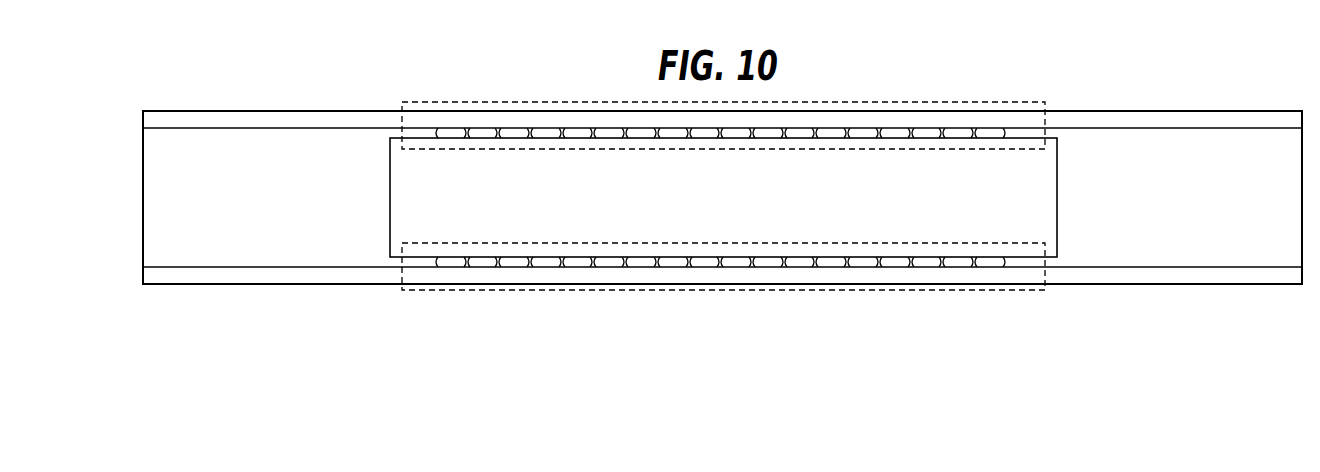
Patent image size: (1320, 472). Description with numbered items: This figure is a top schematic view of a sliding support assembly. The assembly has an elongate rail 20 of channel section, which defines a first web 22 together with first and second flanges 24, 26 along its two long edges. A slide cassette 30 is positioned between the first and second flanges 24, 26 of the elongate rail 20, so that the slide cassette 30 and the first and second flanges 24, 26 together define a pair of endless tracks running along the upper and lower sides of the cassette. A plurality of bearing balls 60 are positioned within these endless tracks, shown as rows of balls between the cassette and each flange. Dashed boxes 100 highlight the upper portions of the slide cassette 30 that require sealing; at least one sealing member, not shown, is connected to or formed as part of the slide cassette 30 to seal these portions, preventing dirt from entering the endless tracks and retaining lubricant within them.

The elongate rail 20 is at (208, 297).
The first web 22 is at (1231, 256).
The first flange 24 is at (1119, 254).
The second flange 26 is at (1150, 118).
The slide cassette 30 is at (798, 228).
The bearing balls 60 is at (673, 262).
The boxes highlighting upper portions of the slide cassette 100 is at (886, 150).